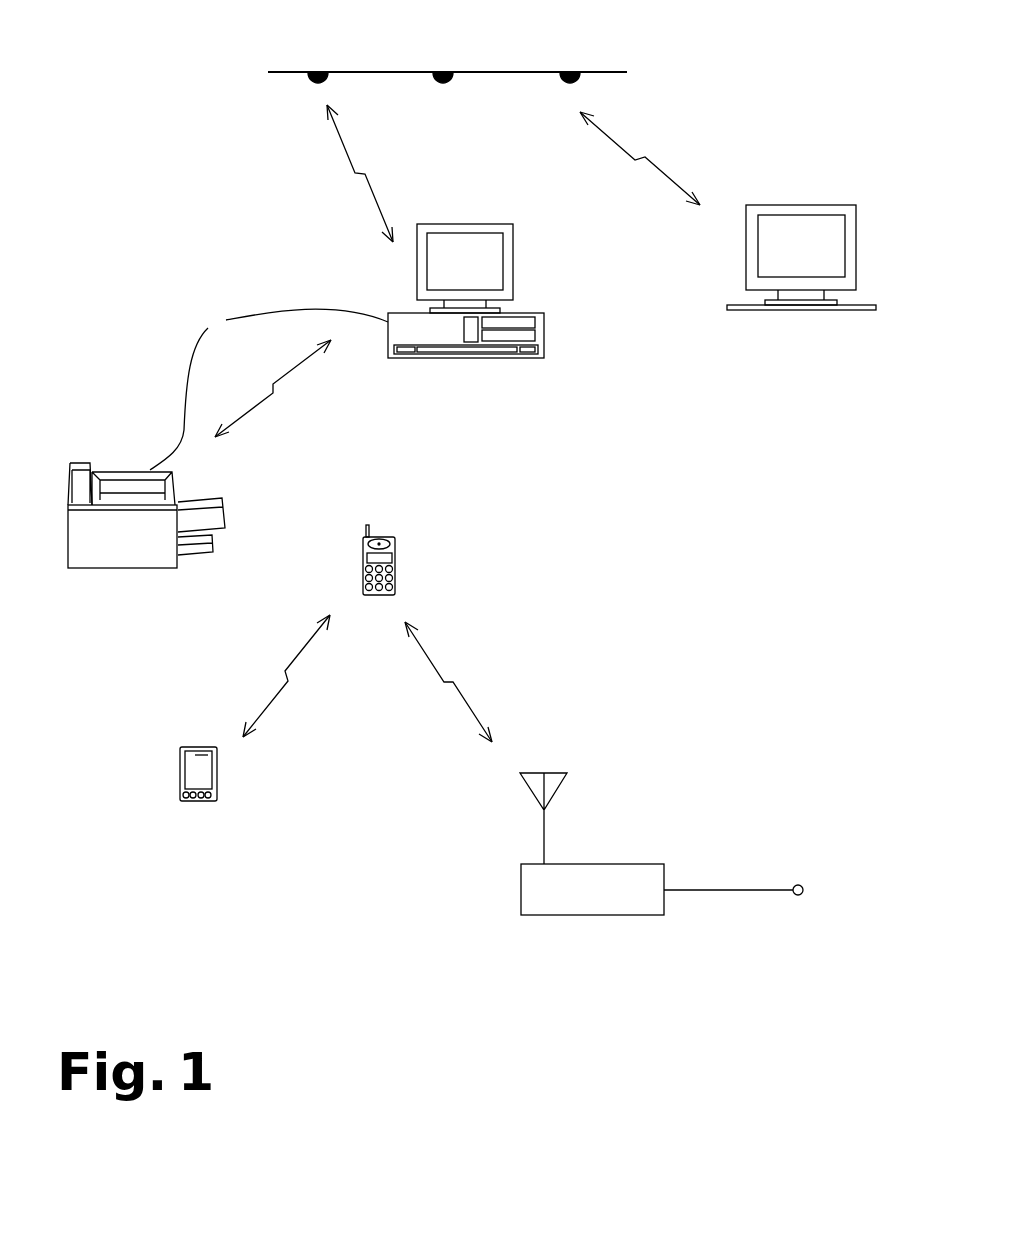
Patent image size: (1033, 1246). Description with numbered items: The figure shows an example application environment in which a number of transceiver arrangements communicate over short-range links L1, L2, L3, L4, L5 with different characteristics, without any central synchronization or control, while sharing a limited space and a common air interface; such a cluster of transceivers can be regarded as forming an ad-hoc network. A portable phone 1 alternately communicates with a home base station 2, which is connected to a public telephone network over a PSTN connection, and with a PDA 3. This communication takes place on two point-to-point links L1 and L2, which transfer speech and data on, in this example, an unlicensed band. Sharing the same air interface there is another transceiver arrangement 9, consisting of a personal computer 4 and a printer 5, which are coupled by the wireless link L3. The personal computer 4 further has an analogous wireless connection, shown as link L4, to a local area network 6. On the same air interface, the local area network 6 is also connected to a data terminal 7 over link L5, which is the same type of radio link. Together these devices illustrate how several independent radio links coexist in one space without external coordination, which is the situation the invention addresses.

The portable phone 1 is at (391, 535).
The home base station 2 is at (657, 864).
The PDA 3 is at (192, 750).
The personal computer 4 is at (449, 341).
The printer 5 is at (142, 467).
The local area network 6 is at (523, 72).
The data terminal 7 is at (745, 258).
The transceiver arrangement 9 is at (269, 385).
The point-to-point link L1 is at (450, 680).
The point-to-point link L2 is at (284, 678).
The short-range link L3 is at (276, 393).
The short-range link L4 is at (372, 177).
The short-range link L5 is at (644, 156).